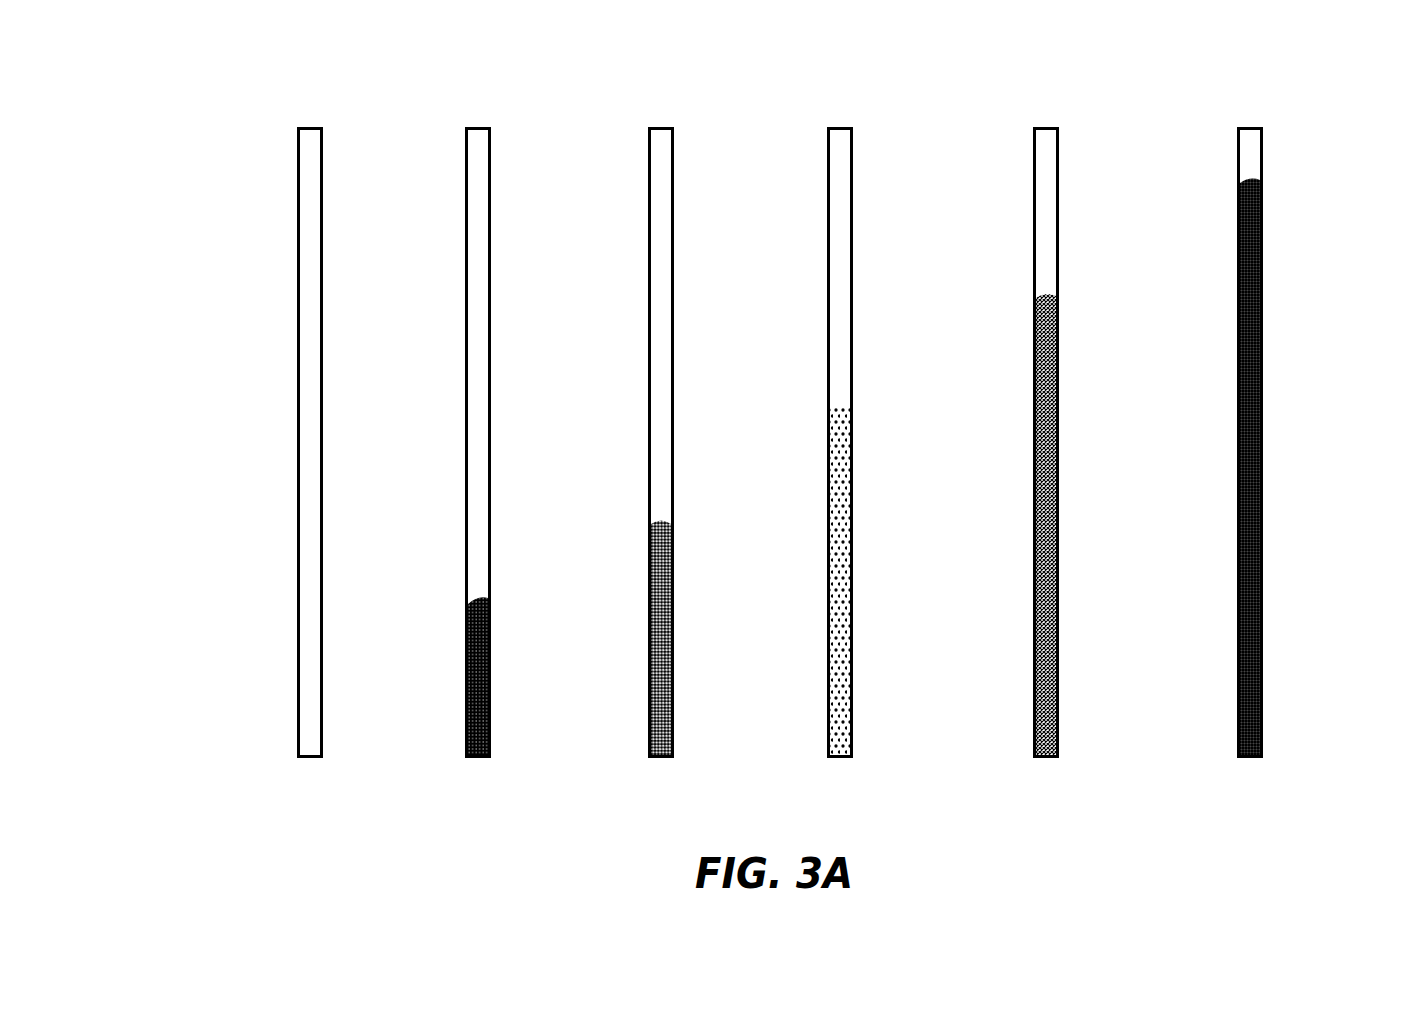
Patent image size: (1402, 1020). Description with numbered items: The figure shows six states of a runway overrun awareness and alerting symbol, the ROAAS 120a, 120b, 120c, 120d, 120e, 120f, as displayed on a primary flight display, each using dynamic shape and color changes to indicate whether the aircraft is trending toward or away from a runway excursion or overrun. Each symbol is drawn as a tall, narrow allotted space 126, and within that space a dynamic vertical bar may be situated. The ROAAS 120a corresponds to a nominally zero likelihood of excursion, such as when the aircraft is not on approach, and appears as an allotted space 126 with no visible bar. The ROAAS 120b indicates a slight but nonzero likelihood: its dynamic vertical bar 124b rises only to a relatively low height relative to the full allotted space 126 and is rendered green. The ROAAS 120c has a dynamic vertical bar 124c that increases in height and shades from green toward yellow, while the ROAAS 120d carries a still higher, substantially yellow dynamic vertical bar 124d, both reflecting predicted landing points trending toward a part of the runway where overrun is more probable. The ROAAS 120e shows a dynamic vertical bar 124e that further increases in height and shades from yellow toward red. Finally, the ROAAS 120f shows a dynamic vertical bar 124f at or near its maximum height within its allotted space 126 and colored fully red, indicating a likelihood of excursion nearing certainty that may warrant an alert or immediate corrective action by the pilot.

The ROAAS 120a is at (232, 108).
The ROAAS 120b is at (425, 102).
The ROAAS 120c is at (627, 103).
The ROAAS 120d is at (808, 103).
The ROAAS 120e is at (1003, 107).
The ROAAS 120f is at (1208, 102).
The allotted space 126 is at (298, 440).
The dynamic vertical bar 124b is at (475, 666).
The dynamic vertical bar 124c is at (655, 638).
The dynamic vertical bar 124d is at (840, 547).
The dynamic vertical bar 124e is at (1043, 429).
The dynamic vertical bar 124f is at (1250, 338).